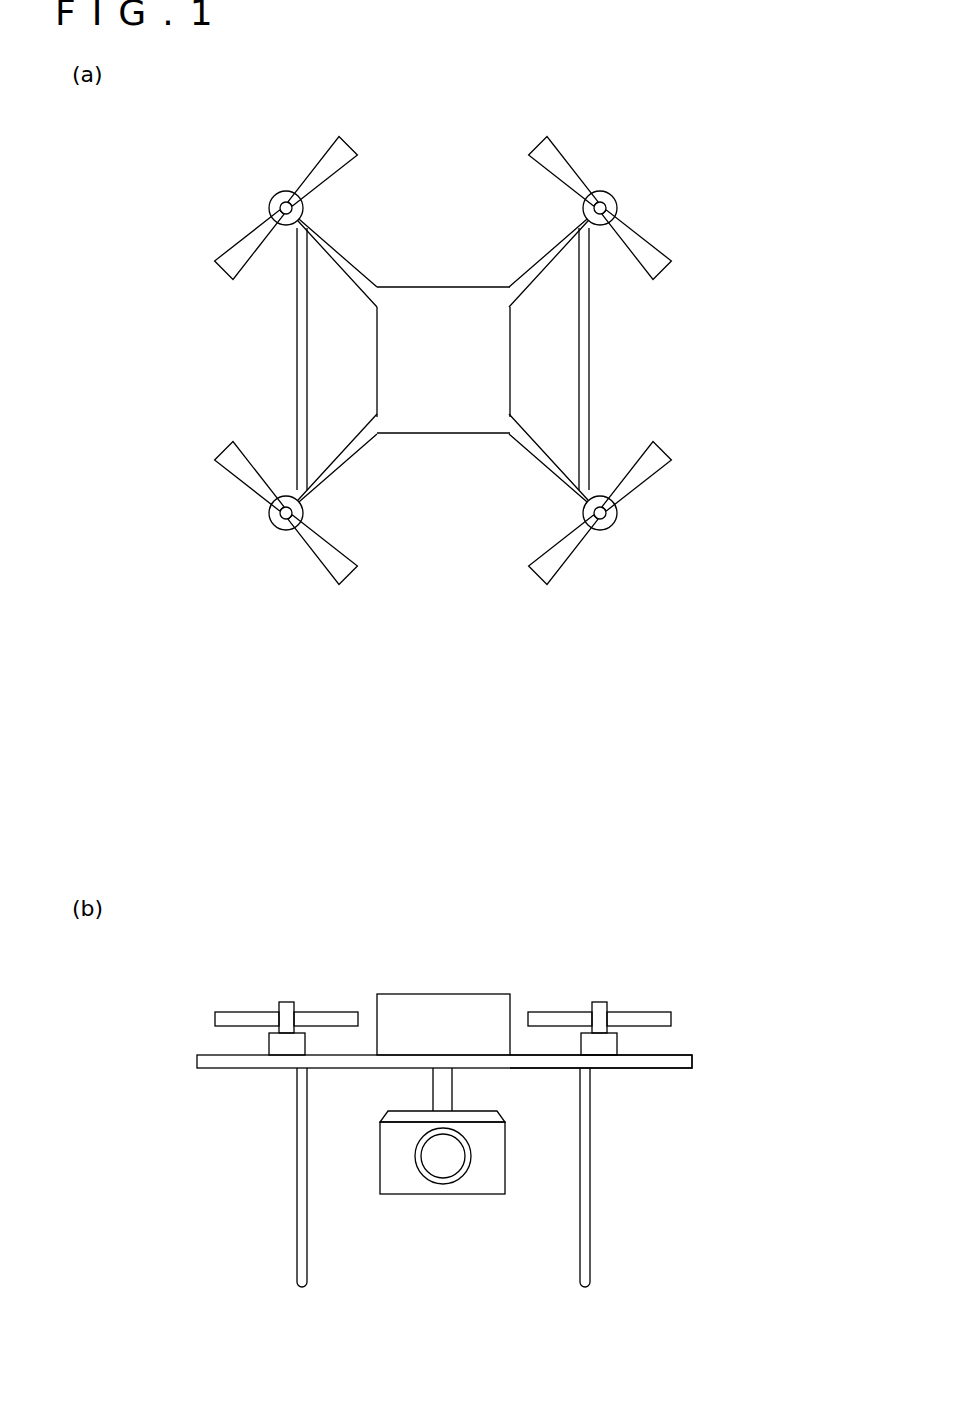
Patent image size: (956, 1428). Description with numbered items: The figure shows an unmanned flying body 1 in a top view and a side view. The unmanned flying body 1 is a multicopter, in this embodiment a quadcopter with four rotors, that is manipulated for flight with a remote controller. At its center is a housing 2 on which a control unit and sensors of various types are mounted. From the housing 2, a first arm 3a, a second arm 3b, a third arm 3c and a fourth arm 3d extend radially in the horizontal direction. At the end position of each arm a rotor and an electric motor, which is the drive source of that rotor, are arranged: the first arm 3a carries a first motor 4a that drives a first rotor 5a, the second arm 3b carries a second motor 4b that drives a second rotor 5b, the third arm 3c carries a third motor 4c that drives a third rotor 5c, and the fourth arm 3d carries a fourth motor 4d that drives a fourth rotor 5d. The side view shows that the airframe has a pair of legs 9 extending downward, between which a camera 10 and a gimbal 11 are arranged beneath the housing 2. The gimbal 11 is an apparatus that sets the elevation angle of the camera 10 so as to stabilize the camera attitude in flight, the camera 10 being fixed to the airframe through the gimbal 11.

The unmanned flying body 1 is at (452, 712).
The housing 2 is at (440, 297).
The first arm 3a is at (342, 260).
The second arm 3b is at (340, 463).
The third arm 3c is at (545, 463).
The fourth arm 3d is at (545, 260).
The first motor 4a is at (278, 195).
The second motor 4b is at (278, 523).
The third motor 4c is at (608, 523).
The fourth motor 4d is at (608, 195).
The first rotor 5a is at (345, 152).
The second rotor 5b is at (345, 568).
The third rotor 5c is at (543, 568).
The fourth rotor 5d is at (542, 152).
The legs 9 is at (297, 363).
The camera 10 is at (483, 1182).
The gimbal 11 is at (448, 1085).